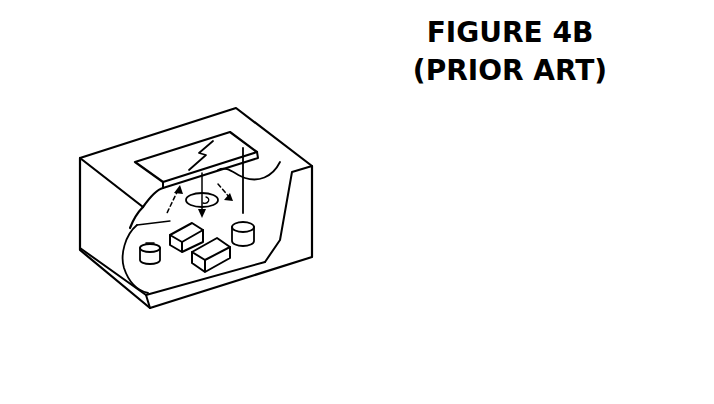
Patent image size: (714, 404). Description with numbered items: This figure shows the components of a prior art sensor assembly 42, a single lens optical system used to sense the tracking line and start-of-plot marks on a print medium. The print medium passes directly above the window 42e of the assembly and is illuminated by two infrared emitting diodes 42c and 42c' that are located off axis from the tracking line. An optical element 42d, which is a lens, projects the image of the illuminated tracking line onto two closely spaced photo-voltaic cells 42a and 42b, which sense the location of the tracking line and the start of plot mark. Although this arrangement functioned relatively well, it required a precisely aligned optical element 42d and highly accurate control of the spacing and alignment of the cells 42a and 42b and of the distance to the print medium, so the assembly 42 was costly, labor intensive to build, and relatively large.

The sensor assembly 42 is at (334, 192).
The photo-voltaic cell 42a is at (210, 270).
The photo-voltaic cell 42b is at (132, 224).
The infrared emitting diode 42c is at (106, 292).
The infrared emitting diode 42c' is at (277, 282).
The optical element 42d is at (280, 162).
The window 42e is at (168, 160).